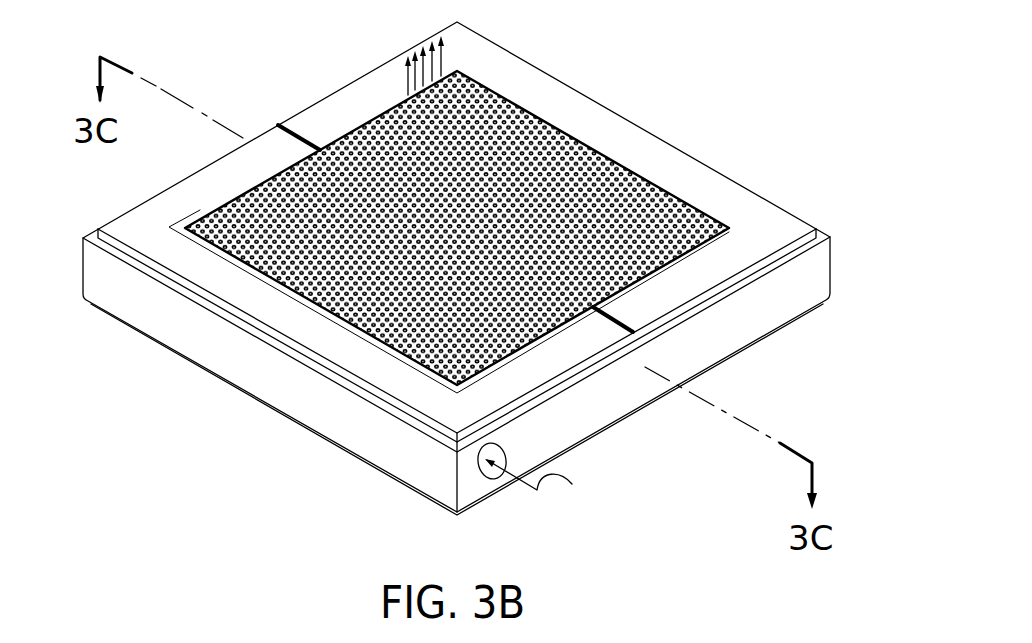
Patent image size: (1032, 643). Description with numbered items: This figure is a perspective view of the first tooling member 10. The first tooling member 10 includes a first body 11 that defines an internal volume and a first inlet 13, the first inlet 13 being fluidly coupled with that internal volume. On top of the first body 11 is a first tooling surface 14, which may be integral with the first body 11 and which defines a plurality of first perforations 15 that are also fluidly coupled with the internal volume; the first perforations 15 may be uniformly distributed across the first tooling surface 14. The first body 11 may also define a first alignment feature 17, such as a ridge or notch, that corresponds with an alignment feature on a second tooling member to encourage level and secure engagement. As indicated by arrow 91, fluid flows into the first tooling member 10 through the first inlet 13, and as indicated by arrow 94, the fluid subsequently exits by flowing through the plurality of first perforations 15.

The first tooling member 10 is at (816, 111).
The first body 11 is at (812, 277).
The first inlet 13 is at (488, 478).
The first tooling surface 14 is at (711, 223).
The first perforations 15 is at (651, 186).
The first alignment feature 17 is at (636, 332).
The arrow 91 is at (545, 479).
The arrow 94 is at (404, 89).